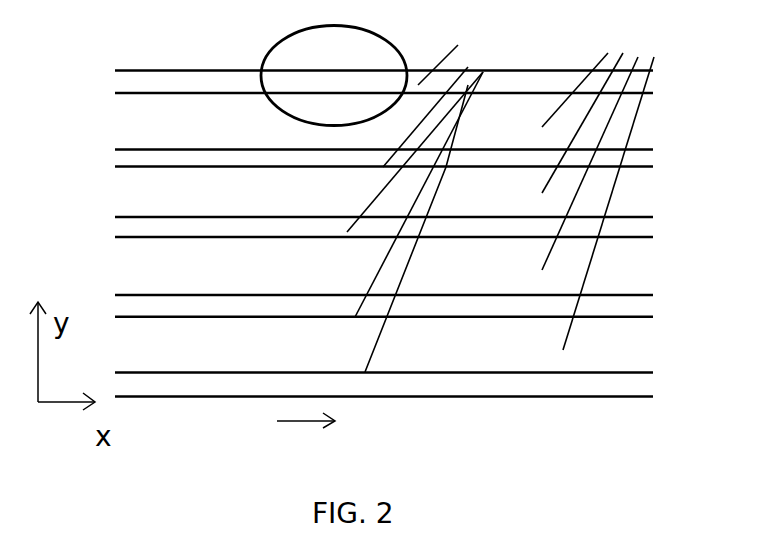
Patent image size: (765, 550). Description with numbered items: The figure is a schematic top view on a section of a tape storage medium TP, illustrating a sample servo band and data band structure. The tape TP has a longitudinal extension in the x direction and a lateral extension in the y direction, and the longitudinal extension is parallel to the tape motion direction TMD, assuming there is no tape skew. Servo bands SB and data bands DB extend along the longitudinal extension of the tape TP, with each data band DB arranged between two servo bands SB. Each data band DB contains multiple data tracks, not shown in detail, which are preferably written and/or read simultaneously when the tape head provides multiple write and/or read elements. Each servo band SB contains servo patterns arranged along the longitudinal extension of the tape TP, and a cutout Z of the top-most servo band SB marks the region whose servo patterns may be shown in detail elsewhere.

The tape storage medium TP is at (72, 13).
The cutout Z is at (272, 50).
The servo band SB is at (429, 202).
The data band DB is at (601, 182).
The tape motion direction TMD is at (338, 441).